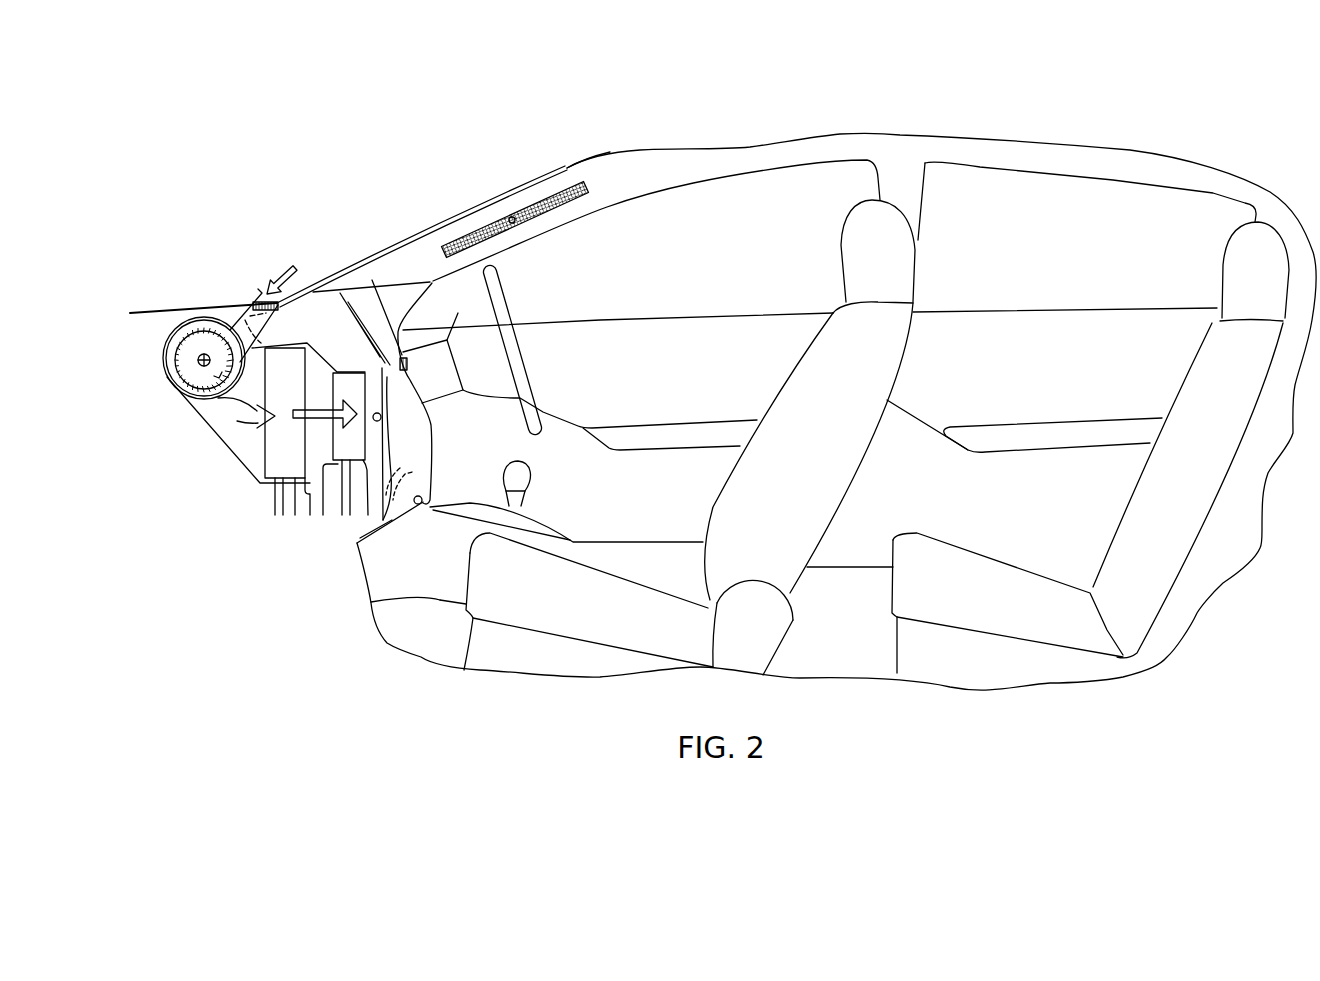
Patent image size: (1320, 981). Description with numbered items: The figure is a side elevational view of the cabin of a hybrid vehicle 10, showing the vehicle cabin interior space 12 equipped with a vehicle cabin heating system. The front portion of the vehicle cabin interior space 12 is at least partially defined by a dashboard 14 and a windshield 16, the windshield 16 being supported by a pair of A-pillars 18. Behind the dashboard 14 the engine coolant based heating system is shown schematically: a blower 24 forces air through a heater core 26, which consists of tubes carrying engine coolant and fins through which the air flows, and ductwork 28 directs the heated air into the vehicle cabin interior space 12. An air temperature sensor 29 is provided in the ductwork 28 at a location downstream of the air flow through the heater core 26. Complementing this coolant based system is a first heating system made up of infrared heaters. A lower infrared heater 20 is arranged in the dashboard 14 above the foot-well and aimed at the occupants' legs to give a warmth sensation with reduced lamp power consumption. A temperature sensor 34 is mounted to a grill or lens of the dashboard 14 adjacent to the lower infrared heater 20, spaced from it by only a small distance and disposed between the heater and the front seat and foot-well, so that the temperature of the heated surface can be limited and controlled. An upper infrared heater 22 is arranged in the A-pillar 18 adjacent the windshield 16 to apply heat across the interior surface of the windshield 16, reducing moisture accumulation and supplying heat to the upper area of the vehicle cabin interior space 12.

The hybrid vehicle 10 is at (1234, 121).
The vehicle cabin interior space 12 is at (744, 223).
The dashboard 14 is at (425, 433).
The windshield 16 is at (372, 258).
The A-pillars 18 is at (619, 180).
The lower infrared heaters 20 is at (412, 475).
The upper infrared heaters 22 is at (545, 195).
The blower 24 is at (197, 385).
The heater core 26 is at (510, 218).
The ductwork 28 is at (393, 455).
The air temperature sensor 29 is at (382, 416).
The temperature sensor 34 is at (422, 505).